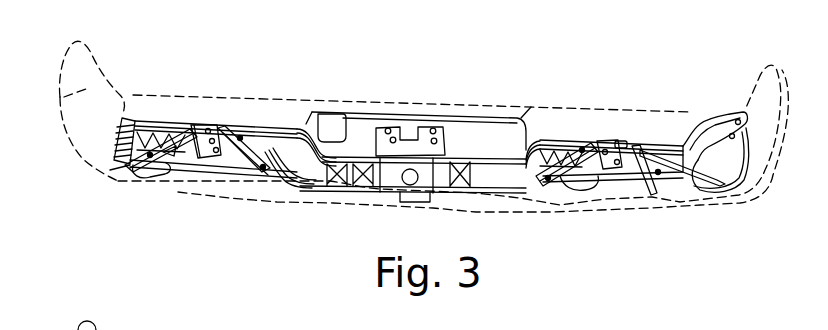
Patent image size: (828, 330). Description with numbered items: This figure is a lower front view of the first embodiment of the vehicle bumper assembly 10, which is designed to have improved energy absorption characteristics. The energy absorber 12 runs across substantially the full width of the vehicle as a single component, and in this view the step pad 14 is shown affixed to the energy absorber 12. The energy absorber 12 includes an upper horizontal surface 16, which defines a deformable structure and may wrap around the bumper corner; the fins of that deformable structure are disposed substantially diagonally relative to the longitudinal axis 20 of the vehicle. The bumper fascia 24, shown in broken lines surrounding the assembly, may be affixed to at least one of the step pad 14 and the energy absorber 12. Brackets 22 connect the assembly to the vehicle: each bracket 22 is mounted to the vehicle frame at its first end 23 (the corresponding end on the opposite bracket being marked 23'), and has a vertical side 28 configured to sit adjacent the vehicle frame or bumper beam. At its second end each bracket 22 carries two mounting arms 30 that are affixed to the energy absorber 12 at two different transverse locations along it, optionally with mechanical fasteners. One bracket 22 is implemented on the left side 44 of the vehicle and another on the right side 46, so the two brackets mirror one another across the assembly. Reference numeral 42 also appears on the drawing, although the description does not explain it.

The vehicle bumper assembly 10 is at (700, 75).
The energy absorber 12 is at (355, 133).
The step pad 14 is at (532, 97).
The upper horizontal surface 16 is at (287, 128).
The longitudinal axis 20 is at (238, 165).
The bracket 22 is at (220, 128).
The first end 23 is at (604, 108).
The bracket flange 23' is at (193, 94).
The bumper fascia 24 is at (58, 97).
The vertical side 28 is at (425, 98).
The mounting arms 30 is at (138, 172).
The reinforcing truss 42 is at (257, 132).
The left side 44 is at (650, 240).
The right side 46 is at (187, 228).